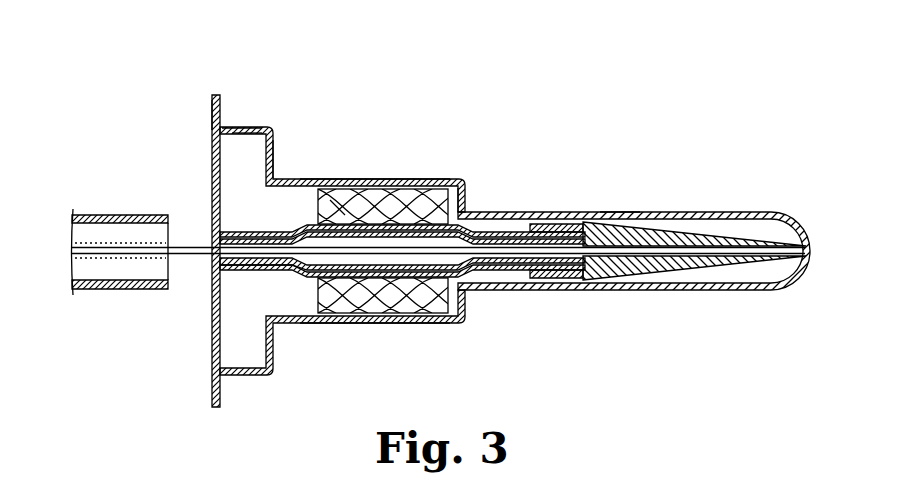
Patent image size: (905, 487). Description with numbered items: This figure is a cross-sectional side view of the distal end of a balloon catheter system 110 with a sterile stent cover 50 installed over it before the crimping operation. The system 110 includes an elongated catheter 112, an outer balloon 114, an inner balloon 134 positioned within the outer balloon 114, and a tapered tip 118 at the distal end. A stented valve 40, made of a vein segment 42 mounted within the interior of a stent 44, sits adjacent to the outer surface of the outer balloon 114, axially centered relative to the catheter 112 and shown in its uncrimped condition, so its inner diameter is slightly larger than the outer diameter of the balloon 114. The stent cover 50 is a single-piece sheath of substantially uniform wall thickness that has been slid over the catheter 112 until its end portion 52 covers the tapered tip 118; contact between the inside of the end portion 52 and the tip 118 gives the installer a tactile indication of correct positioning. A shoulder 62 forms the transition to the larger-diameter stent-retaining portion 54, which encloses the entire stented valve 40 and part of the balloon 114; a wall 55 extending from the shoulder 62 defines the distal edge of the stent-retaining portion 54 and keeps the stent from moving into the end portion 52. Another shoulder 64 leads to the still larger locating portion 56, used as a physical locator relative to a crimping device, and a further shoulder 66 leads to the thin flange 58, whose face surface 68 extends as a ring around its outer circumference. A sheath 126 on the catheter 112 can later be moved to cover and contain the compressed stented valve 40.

The stented valve 40 is at (341, 198).
The vein segment 42 is at (293, 178).
The stent 44 is at (360, 200).
The stent cover 50 is at (587, 195).
The end portion 52 is at (677, 212).
The stent-retaining portion 54 is at (377, 178).
The wall 55 is at (472, 190).
The locating portion 56 is at (242, 126).
The flange 58 is at (216, 93).
The shoulder 62 is at (472, 290).
The shoulder 64 is at (278, 176).
The shoulder 66 is at (230, 124).
The face surface 68 is at (212, 115).
The balloon catheter system 110 is at (508, 274).
The catheter 112 is at (188, 258).
The outer balloon 114 is at (482, 230).
The tapered tip 118 is at (708, 232).
The sheath 126 is at (107, 213).
The inner balloon 134 is at (516, 238).